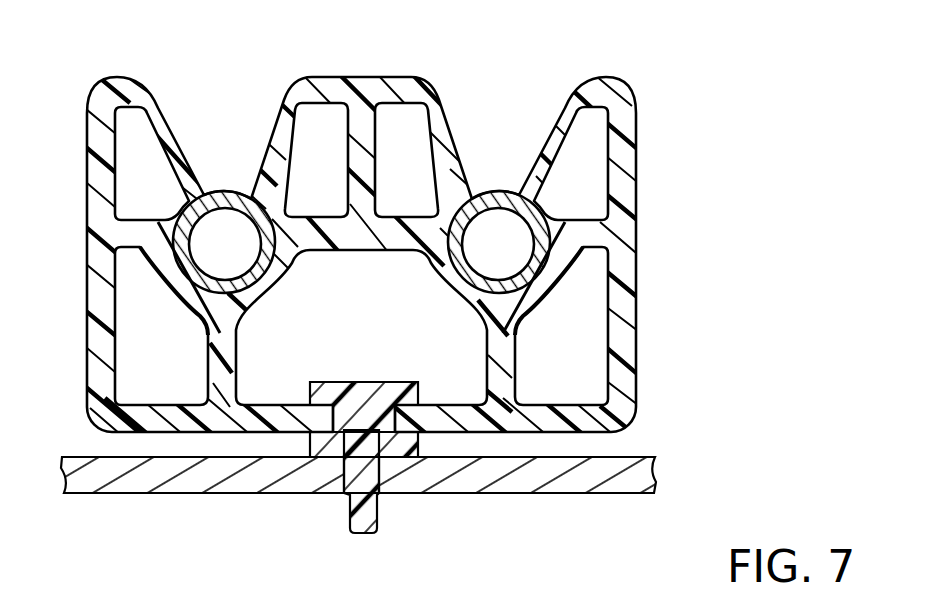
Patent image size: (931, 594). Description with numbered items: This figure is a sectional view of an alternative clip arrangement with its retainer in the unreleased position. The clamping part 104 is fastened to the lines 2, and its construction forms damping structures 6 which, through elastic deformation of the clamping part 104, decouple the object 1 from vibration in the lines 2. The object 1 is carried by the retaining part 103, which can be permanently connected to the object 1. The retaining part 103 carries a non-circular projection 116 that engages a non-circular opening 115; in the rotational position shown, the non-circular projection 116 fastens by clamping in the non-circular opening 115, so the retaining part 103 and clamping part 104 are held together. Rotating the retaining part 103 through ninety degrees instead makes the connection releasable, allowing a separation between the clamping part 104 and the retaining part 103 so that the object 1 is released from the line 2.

The clamping part 104 is at (625, 236).
The line 2 is at (224, 191).
The damping structures 6 is at (187, 310).
The non-circular projection 116 is at (368, 382).
The non-circular opening 115 is at (330, 414).
The object 1 is at (633, 467).
The retaining part 103 is at (363, 478).